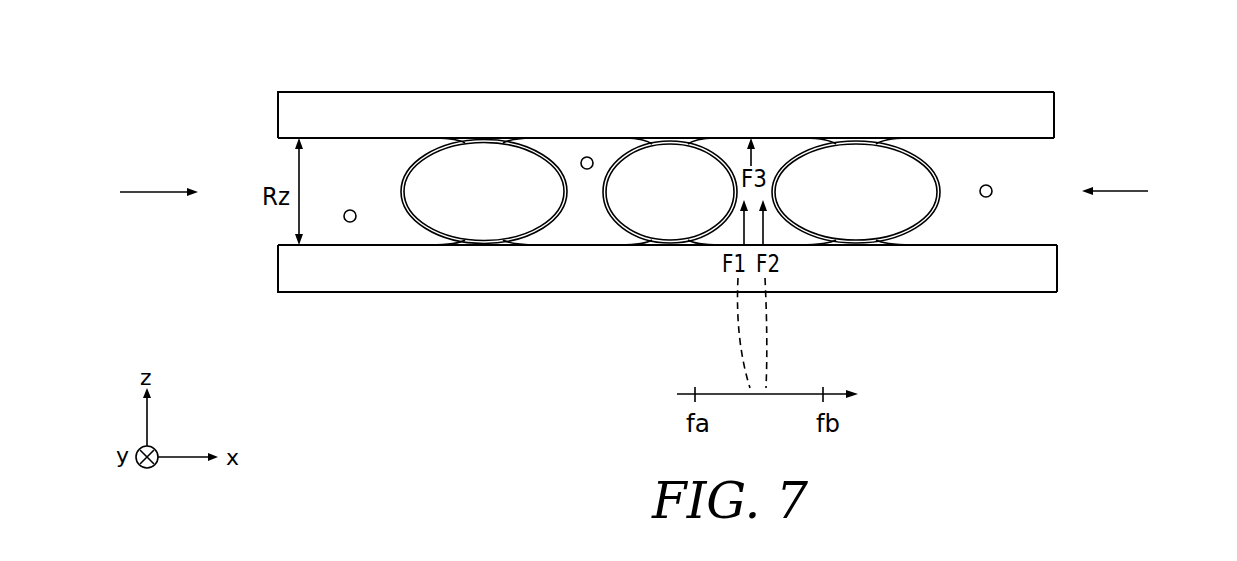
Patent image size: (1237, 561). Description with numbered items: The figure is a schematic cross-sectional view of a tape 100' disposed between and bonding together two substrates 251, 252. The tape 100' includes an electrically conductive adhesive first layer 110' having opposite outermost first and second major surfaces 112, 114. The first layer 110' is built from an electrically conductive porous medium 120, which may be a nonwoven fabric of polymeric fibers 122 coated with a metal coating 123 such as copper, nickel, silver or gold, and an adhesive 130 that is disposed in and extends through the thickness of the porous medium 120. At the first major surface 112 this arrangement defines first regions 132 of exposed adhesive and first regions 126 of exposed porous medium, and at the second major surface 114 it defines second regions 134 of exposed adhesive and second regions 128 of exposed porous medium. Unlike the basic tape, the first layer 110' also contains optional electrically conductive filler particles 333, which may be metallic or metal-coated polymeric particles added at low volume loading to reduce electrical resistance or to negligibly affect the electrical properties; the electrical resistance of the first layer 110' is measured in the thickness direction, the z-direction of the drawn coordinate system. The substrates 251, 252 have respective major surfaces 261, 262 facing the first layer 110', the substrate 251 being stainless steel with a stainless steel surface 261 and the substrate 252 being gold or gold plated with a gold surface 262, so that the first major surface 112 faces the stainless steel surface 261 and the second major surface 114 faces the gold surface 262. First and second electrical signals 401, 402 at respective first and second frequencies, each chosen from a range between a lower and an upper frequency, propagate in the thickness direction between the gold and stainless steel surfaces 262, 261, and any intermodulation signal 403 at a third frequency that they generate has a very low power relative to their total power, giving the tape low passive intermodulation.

The tape 100' is at (135, 192).
The first layer 110' is at (1141, 192).
The first major surface 112 is at (958, 138).
The second major surface 114 is at (962, 247).
The electrically conductive porous medium 120 is at (394, 191).
The polymeric fibers 122 is at (481, 152).
The metal coating 123 is at (630, 158).
The first regions of exposed porous medium 126 is at (863, 137).
The second regions of exposed porous medium 128 is at (483, 245).
The adhesive 130 is at (588, 222).
The first regions of exposed adhesive 132 is at (731, 137).
The second regions of exposed adhesive 134 is at (922, 247).
The substrate 251 is at (1038, 107).
The substrate 252 is at (1042, 272).
The major surface 261 is at (1033, 137).
The major surface 262 is at (1022, 247).
The electrically conductive filler particles 333 is at (349, 222).
The first electrical signal 401 is at (742, 227).
The second electrical signal 402 is at (765, 227).
The intermodulation signal 403 is at (755, 155).